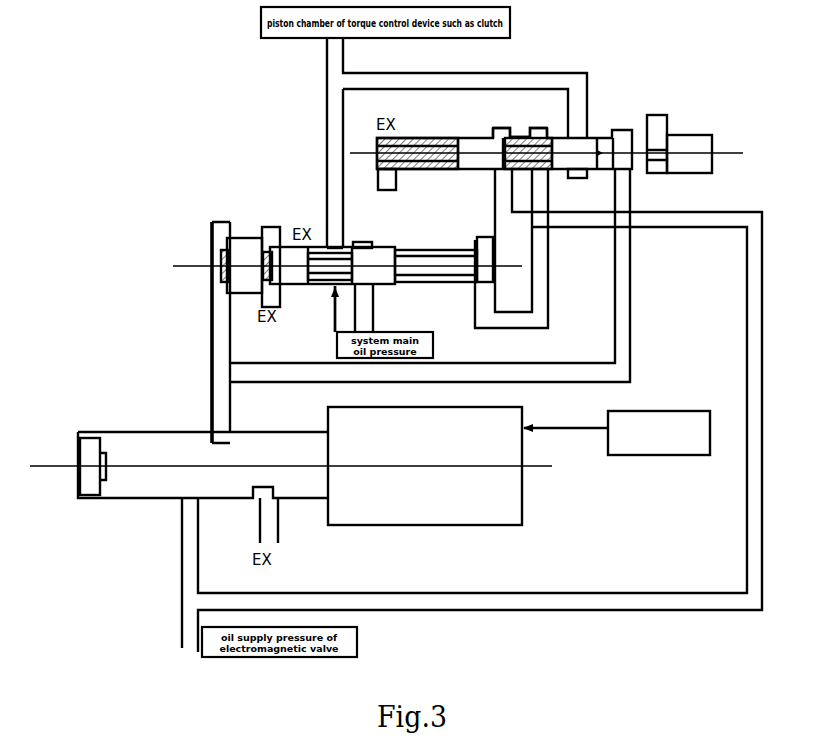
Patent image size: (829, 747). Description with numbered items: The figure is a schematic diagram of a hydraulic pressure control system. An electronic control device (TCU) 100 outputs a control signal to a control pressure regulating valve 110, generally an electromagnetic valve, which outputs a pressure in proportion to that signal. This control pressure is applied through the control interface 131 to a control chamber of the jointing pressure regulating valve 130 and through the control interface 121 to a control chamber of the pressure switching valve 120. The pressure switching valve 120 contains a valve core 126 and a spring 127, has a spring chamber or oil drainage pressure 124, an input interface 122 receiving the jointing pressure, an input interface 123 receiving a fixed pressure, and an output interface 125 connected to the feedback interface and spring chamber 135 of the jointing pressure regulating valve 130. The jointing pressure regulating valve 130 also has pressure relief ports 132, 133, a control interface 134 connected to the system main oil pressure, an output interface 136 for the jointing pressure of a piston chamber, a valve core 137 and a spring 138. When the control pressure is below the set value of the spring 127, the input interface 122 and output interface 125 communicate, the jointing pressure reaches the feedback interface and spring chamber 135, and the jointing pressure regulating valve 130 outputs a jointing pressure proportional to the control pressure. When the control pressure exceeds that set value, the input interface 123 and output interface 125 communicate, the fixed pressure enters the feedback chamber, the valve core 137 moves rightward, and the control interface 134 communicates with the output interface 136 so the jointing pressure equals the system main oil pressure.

The electronic control device (TCU) 100 is at (653, 456).
The control pressure regulating valve 110 is at (500, 456).
The pressure switching valve 120 is at (714, 149).
The control interface 121 is at (626, 126).
The input interface 122 is at (572, 179).
The input interface 123 is at (497, 126).
The spring chamber or oil drainage pressure 124 is at (391, 192).
The output interface 125 is at (545, 127).
The valve core 126 is at (549, 165).
The spring 127 is at (441, 134).
The jointing pressure regulating valve 130 is at (204, 269).
The control interface 131 is at (211, 224).
The pressure relief port 132 is at (262, 225).
The pressure relief port 133 is at (302, 290).
The control interface 134 is at (367, 242).
The feedback interface and spring chamber 135 is at (486, 239).
The output interface 136 is at (334, 332).
The valve core 137 is at (345, 247).
The spring 138 is at (417, 288).